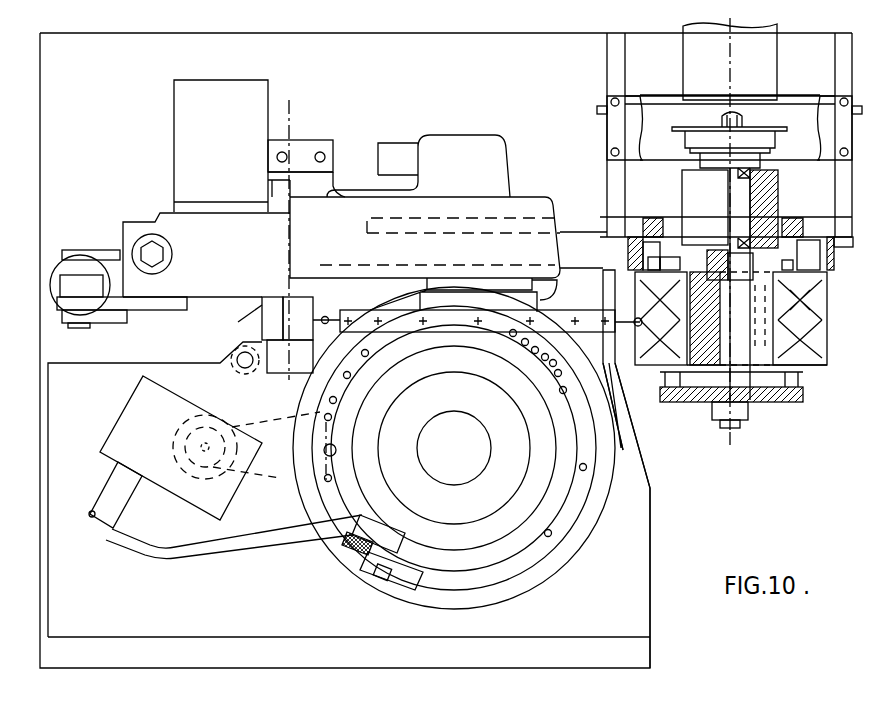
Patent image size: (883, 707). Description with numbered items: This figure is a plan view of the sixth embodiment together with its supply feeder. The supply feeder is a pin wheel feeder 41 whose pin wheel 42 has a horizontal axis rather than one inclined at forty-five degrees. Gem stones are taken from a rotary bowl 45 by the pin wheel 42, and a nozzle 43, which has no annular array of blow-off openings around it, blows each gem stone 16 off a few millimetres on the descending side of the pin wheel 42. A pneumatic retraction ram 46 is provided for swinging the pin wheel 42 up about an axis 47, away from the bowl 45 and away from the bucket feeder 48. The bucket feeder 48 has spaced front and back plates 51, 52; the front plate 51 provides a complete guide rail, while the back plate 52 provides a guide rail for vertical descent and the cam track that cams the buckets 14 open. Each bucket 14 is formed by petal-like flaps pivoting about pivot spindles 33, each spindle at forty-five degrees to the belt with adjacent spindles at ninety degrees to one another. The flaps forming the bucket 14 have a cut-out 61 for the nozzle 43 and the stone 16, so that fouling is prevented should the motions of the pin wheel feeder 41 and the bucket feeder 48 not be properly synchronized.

The bucket 14 is at (665, 325).
The gem stone 16 is at (454, 448).
The pivot spindle 33 is at (815, 355).
The pin wheel feeder 41 is at (533, 195).
The pin wheel 42 is at (460, 320).
The nozzle 43 is at (328, 318).
The rotary bowl 45 is at (590, 522).
The pneumatic retraction ram 46 is at (77, 265).
The axis 47 is at (290, 100).
The bucket feeder 48 is at (770, 408).
The front plate 51 is at (790, 402).
The back plate 52 is at (840, 253).
The cut-out 61 is at (826, 322).